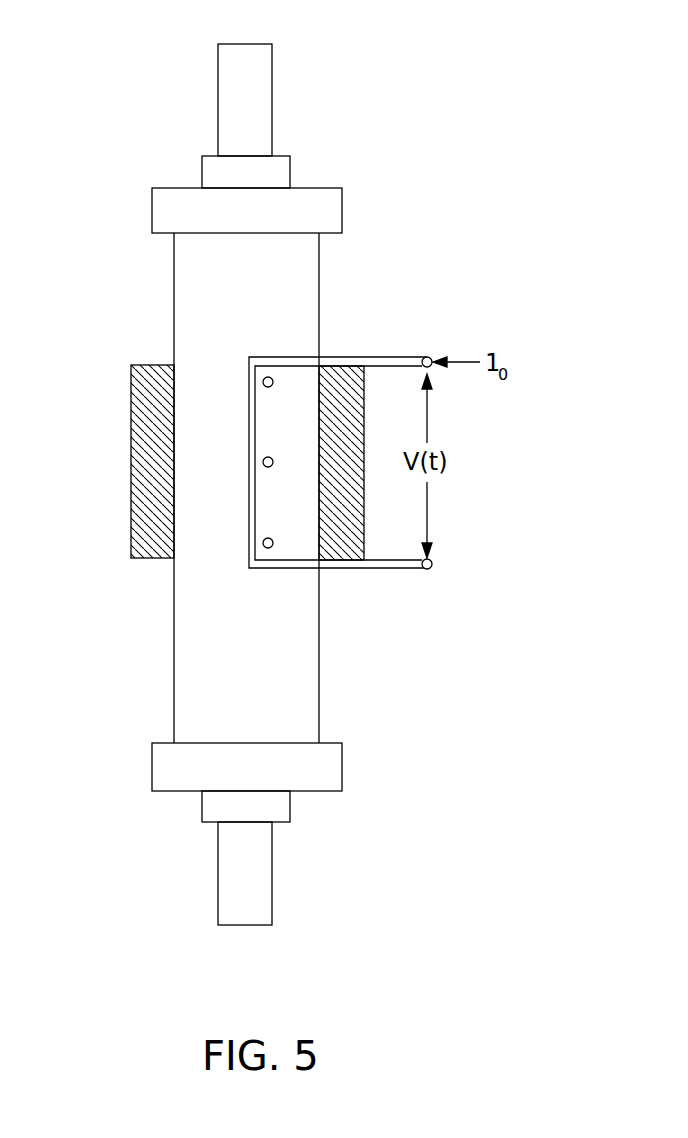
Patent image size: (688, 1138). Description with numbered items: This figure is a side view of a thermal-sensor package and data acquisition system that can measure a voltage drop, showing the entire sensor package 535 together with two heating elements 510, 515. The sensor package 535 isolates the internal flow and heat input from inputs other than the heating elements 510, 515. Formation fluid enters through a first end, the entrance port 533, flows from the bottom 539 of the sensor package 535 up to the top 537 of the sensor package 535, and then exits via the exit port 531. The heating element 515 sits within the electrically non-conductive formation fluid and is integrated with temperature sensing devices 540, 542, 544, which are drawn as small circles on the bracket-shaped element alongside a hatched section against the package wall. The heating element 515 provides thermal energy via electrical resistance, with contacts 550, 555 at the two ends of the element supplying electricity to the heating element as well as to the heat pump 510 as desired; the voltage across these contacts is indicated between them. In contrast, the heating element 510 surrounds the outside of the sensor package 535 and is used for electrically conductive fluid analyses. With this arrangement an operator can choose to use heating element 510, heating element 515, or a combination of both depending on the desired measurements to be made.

The exit port 531 is at (295, 55).
The top of the sensor package 537 is at (357, 210).
The sensor package 535 is at (174, 283).
The heating element 510 is at (131, 452).
The heating element 515 is at (249, 416).
The temperature sensing device 540 is at (273, 384).
The temperature sensing device 542 is at (273, 462).
The temperature sensing device 544 is at (292, 530).
The contact 550 is at (428, 356).
The contact 555 is at (427, 570).
The bottom of the sensor package 539 is at (357, 770).
The entrance port 533 is at (280, 935).